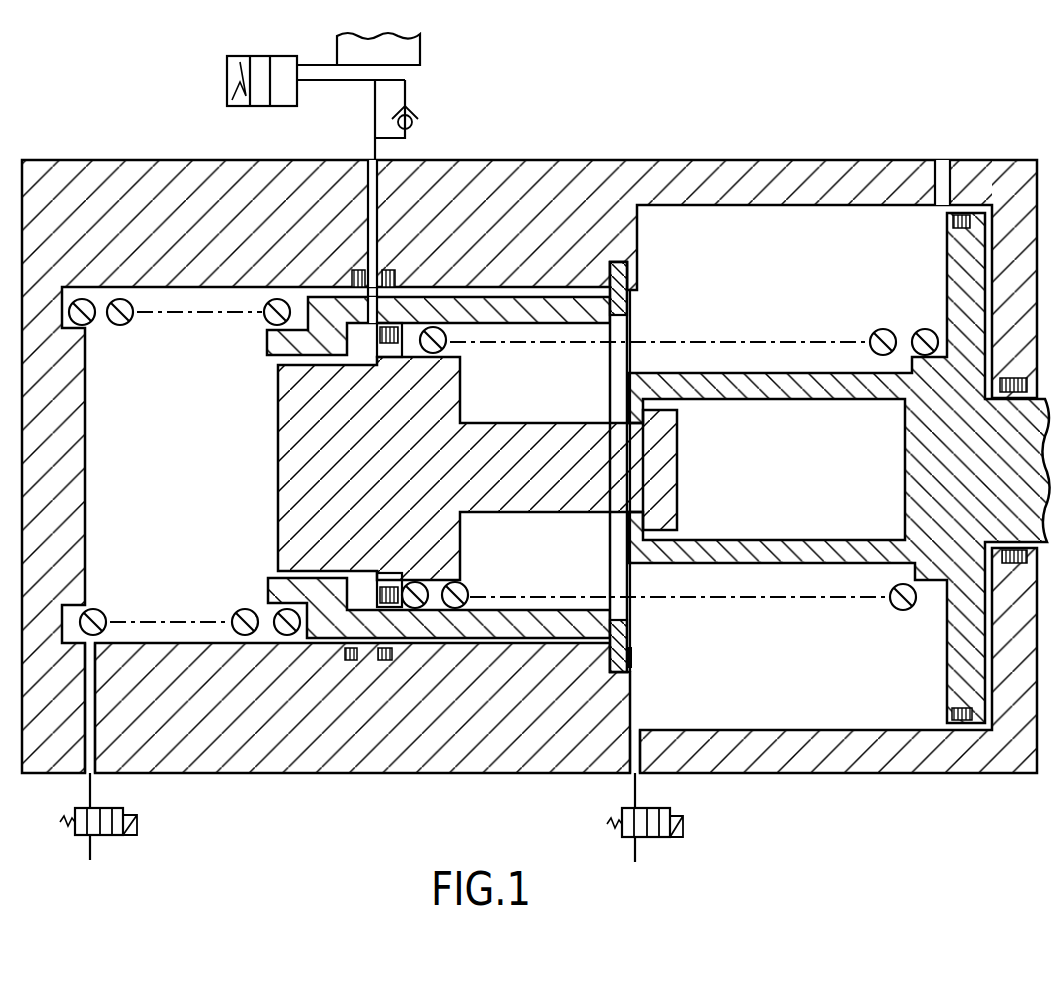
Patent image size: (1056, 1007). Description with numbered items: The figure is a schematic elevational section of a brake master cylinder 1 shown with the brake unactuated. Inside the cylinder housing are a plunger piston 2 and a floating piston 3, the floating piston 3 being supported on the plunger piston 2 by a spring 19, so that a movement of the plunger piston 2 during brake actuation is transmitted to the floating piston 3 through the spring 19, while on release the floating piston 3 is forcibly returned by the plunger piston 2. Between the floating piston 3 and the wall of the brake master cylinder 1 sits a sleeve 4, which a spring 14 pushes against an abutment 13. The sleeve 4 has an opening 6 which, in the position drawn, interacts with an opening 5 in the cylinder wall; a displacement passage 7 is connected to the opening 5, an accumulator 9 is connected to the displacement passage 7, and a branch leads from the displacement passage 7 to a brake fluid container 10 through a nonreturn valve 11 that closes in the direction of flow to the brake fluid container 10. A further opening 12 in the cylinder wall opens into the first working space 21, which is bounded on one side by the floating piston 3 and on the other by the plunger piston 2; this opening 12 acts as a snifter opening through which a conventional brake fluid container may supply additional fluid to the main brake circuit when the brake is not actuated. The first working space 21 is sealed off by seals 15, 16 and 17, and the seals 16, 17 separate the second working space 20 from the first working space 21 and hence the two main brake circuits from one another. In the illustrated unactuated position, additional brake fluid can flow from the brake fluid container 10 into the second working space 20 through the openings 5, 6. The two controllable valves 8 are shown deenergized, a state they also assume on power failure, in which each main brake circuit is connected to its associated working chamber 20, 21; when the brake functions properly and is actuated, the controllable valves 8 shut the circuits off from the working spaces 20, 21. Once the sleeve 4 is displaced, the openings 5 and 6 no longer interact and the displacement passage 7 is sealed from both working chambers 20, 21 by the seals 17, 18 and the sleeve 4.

The brake master cylinder 1 is at (92, 178).
The plunger piston 2 is at (962, 306).
The floating piston 3 is at (298, 436).
The sleeve 4 is at (272, 342).
The opening 5 is at (368, 190).
The opening 6 is at (372, 330).
The displacement passage 7 is at (345, 75).
The controllable valves 8 is at (112, 836).
The accumulator 9 is at (227, 96).
The brake fluid container 10 is at (420, 68).
The nonreturn valve 11 is at (415, 124).
The opening 12 is at (940, 190).
The abutment 13 is at (630, 308).
The spring 14 is at (125, 322).
The seal 15 is at (962, 228).
The seal 16 is at (390, 345).
The seal 17 is at (392, 282).
The seal 18 is at (358, 282).
The spring 19 is at (878, 330).
The second working space 20 is at (143, 414).
The first working space 21 is at (785, 304).